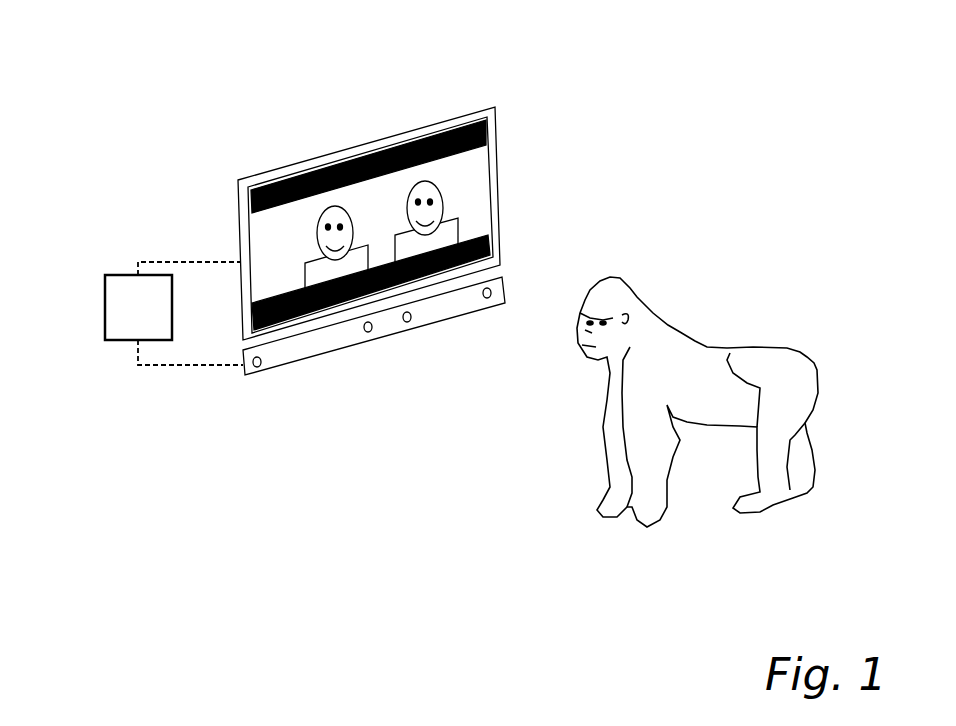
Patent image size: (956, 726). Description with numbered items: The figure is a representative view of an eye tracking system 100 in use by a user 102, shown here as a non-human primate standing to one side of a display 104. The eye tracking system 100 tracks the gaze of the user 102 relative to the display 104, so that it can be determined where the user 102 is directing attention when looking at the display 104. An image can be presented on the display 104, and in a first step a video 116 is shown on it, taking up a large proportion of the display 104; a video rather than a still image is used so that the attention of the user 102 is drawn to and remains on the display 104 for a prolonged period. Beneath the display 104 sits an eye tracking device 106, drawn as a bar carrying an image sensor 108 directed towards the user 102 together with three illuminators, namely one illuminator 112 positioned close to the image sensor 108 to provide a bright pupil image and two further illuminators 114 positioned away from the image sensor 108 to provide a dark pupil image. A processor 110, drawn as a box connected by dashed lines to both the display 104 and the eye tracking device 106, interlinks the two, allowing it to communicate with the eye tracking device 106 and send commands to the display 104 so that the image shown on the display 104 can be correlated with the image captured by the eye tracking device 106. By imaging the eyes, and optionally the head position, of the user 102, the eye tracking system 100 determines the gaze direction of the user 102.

The eye tracking system 100 is at (185, 84).
The user 102 is at (707, 347).
The display 104 is at (497, 120).
The eye tracking device 106 is at (503, 285).
The image sensor 108 is at (405, 324).
The processor 110 is at (105, 323).
The illuminator 112 is at (366, 333).
The illuminators 114 is at (245, 378).
The video 116 is at (279, 233).